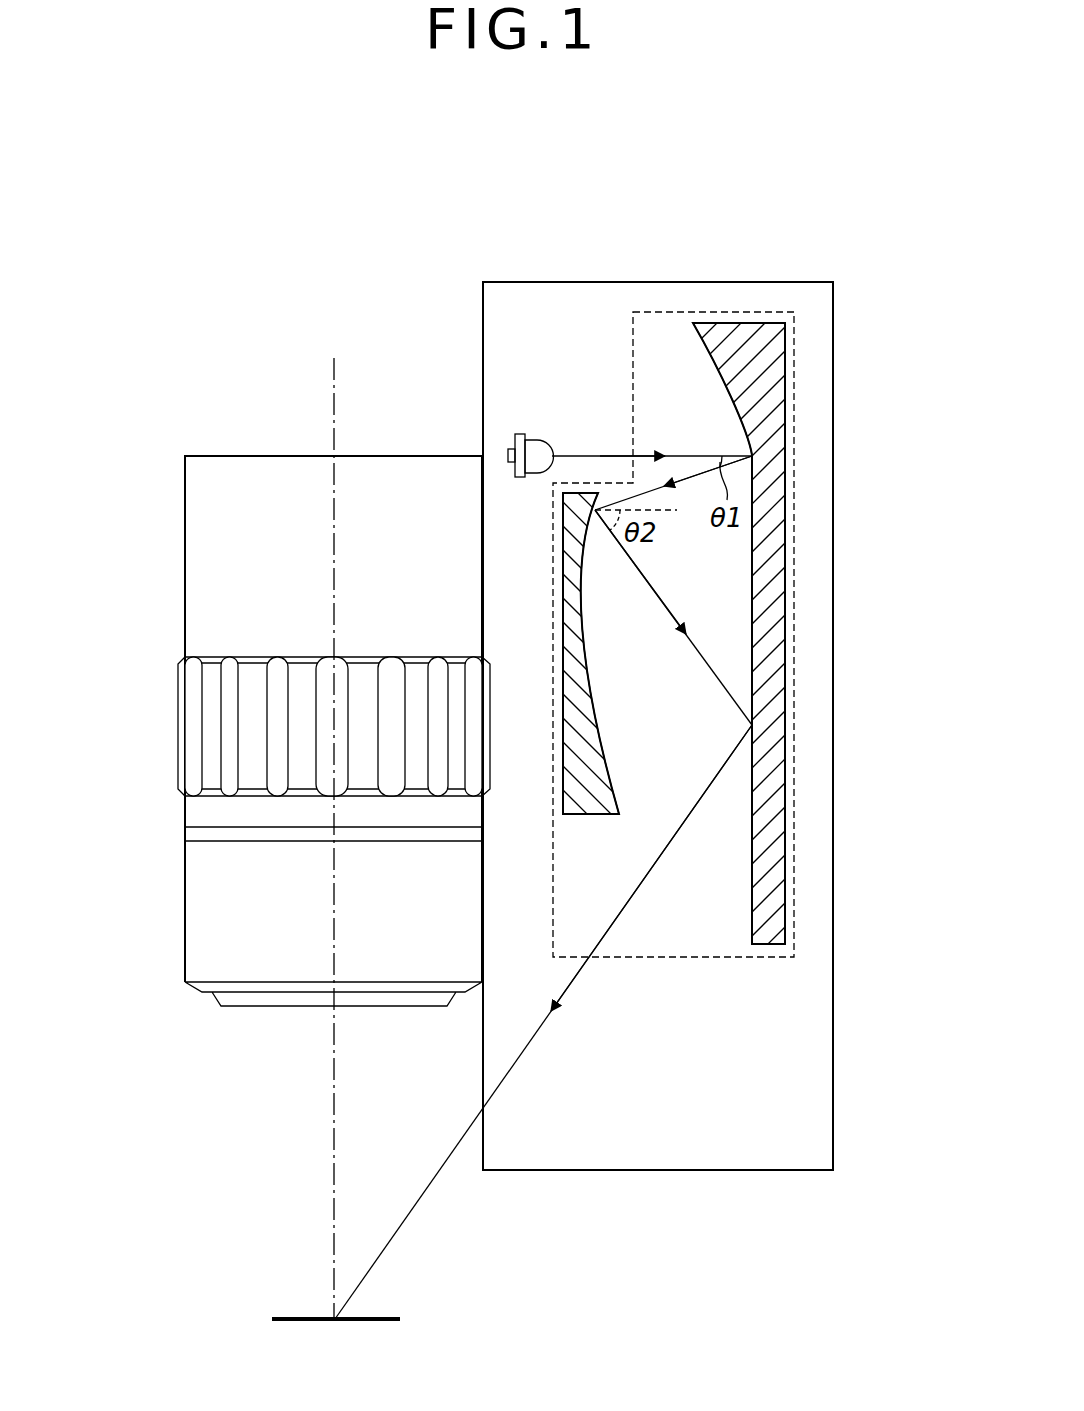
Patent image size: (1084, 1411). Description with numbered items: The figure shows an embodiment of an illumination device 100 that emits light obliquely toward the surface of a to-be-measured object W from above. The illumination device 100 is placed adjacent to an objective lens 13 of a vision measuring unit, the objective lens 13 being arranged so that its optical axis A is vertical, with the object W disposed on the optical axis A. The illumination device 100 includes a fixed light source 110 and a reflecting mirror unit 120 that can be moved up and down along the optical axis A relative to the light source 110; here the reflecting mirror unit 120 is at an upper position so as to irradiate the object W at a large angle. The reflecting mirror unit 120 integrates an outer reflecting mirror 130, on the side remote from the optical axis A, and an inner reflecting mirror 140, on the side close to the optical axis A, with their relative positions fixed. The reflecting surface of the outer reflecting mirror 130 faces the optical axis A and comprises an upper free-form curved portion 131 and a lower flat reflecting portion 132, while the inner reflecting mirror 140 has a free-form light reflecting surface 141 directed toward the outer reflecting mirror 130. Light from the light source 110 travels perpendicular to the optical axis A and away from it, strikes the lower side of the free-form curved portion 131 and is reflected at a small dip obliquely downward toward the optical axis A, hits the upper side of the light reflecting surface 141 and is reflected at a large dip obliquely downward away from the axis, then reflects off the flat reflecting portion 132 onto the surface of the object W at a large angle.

The illumination device 100 is at (812, 250).
The objective lens 13 is at (197, 508).
The light source 110 is at (538, 435).
The reflecting mirror unit 120 is at (794, 397).
The outer reflecting mirror 130 is at (782, 649).
The free-form curved portion 131 is at (720, 372).
The flat reflecting portion 132 is at (752, 890).
The inner reflecting mirror 140 is at (583, 812).
The light reflecting surface 141 is at (607, 786).
The optical axis A is at (333, 817).
The to-be-measured object W is at (385, 1318).